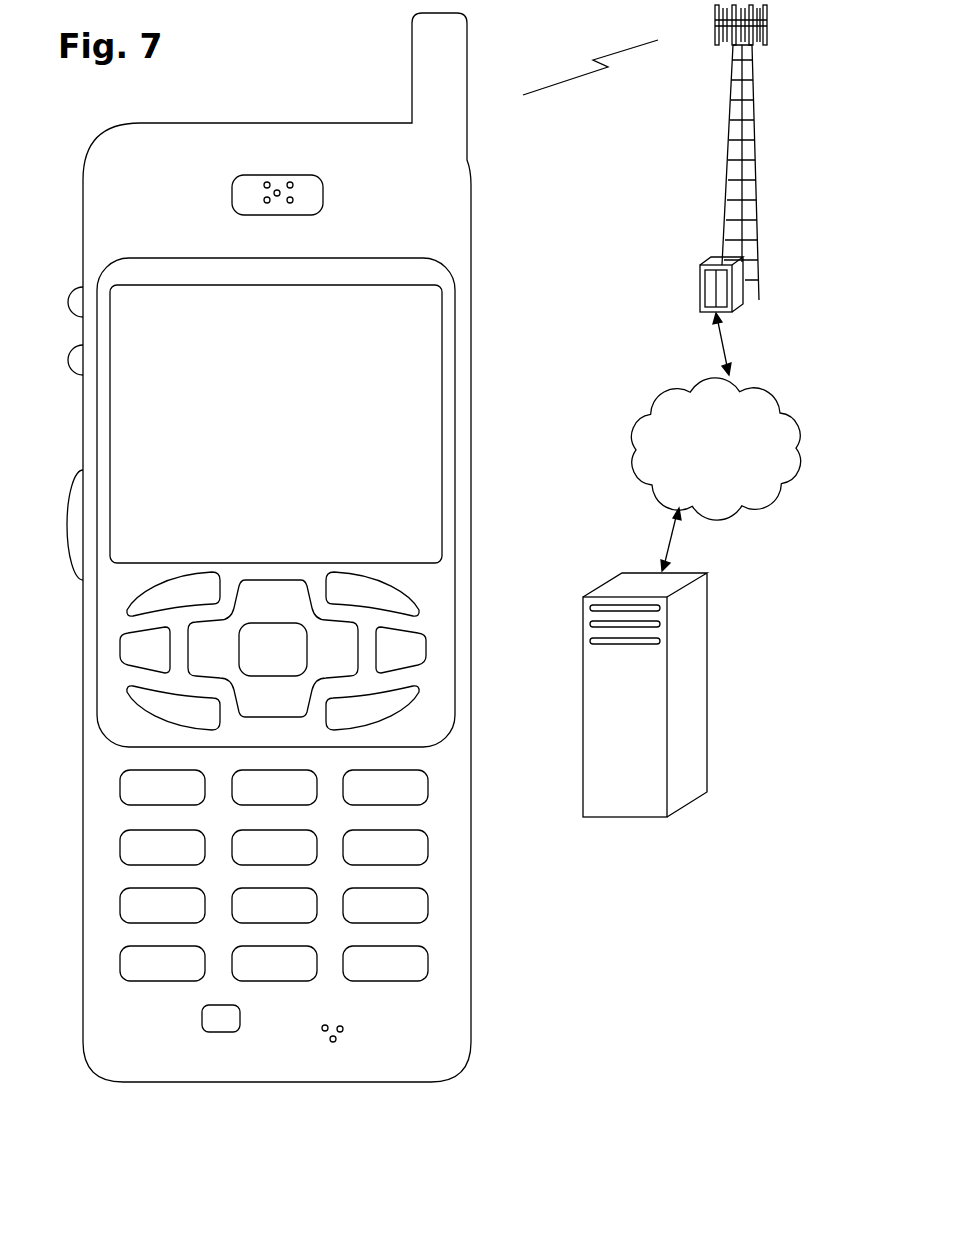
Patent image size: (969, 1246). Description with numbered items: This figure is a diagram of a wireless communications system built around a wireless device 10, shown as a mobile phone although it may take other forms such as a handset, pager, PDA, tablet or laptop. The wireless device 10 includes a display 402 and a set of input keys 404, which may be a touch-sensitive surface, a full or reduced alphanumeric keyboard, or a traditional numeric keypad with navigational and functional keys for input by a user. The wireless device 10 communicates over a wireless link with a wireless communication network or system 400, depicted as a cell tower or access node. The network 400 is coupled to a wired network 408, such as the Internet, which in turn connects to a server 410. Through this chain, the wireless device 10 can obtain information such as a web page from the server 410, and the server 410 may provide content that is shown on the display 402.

The wireless device 10 is at (128, 1082).
The wireless communication network 400 is at (728, 172).
The display 402 is at (448, 297).
The input keys 404 is at (480, 572).
The wired network 408 is at (648, 491).
The server 410 is at (624, 819).